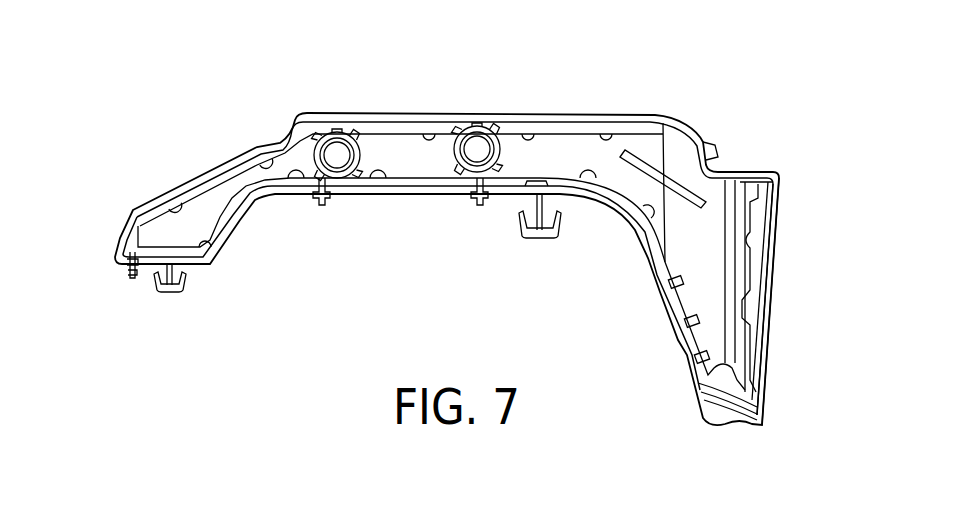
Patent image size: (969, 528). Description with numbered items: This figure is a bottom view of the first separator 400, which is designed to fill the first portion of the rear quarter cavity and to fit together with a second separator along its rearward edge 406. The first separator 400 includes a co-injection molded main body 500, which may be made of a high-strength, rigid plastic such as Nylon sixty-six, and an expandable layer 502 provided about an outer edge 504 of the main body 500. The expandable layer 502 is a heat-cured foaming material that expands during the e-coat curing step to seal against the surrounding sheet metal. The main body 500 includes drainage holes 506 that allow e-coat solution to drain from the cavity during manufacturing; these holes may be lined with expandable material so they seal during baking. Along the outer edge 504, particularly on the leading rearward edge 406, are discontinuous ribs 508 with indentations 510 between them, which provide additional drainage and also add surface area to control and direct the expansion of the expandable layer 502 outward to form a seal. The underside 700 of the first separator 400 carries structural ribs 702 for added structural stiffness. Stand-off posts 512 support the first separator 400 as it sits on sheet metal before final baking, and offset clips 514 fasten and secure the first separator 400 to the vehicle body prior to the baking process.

The first separator 400 is at (97, 229).
The rearward edge 406 is at (795, 204).
The main body 500 is at (693, 218).
The expandable layer 502 is at (781, 172).
The outer edge 504 is at (742, 176).
The drainage holes 506 is at (338, 150).
The discontinuous ribs 508 is at (765, 218).
The indentations 510 is at (765, 257).
The stand-off posts 512 is at (322, 207).
The offset clips 514 is at (540, 240).
The underside 700 is at (388, 148).
The structural ribs 702 is at (636, 120).